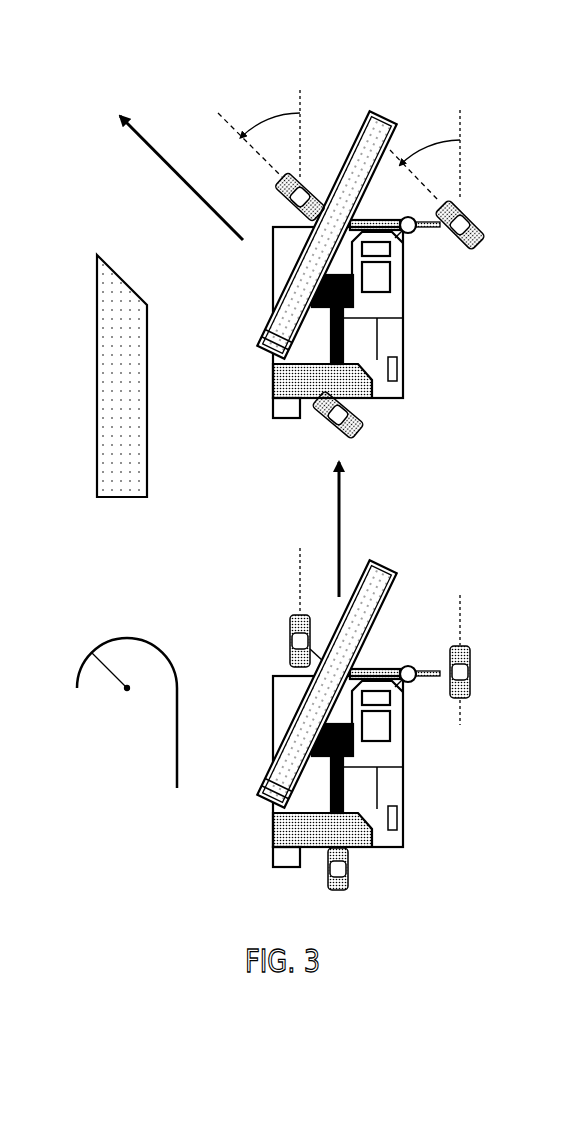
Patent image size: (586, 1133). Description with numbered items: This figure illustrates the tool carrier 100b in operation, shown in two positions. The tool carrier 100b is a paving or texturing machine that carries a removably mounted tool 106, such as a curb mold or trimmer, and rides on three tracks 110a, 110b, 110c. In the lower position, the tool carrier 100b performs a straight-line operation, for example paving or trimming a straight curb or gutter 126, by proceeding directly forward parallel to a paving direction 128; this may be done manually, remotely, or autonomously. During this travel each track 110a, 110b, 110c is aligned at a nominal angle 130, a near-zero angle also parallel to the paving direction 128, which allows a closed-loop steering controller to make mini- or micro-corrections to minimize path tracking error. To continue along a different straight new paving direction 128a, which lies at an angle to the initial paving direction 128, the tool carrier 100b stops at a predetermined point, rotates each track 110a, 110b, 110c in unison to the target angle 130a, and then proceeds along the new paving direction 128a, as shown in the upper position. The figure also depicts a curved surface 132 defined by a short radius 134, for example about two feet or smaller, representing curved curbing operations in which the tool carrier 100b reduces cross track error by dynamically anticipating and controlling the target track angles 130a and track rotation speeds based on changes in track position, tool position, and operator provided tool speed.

The tool carrier 100b is at (76, 54).
The target angle 130a is at (240, 124).
The new paving direction 128a is at (172, 176).
The straight curb or gutter 126 is at (119, 279).
The paving direction 128 is at (342, 527).
The track 110a is at (290, 628).
The nominal angle 130 is at (462, 612).
The track 110b is at (470, 692).
The curved surface 132 is at (144, 643).
The short radius 134 is at (110, 680).
The tool 106 is at (272, 858).
The track 110c is at (335, 892).